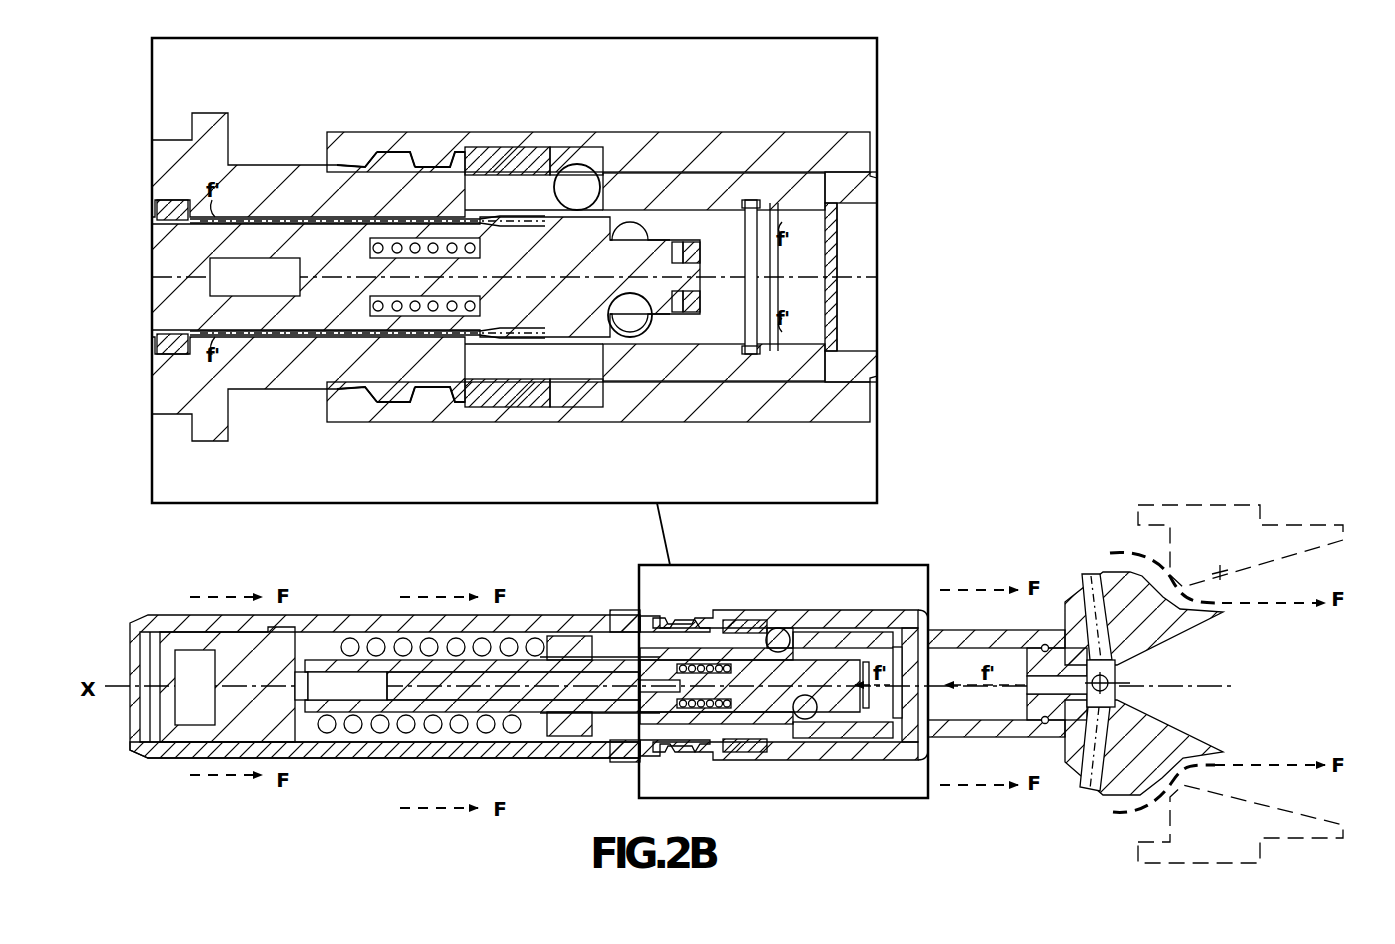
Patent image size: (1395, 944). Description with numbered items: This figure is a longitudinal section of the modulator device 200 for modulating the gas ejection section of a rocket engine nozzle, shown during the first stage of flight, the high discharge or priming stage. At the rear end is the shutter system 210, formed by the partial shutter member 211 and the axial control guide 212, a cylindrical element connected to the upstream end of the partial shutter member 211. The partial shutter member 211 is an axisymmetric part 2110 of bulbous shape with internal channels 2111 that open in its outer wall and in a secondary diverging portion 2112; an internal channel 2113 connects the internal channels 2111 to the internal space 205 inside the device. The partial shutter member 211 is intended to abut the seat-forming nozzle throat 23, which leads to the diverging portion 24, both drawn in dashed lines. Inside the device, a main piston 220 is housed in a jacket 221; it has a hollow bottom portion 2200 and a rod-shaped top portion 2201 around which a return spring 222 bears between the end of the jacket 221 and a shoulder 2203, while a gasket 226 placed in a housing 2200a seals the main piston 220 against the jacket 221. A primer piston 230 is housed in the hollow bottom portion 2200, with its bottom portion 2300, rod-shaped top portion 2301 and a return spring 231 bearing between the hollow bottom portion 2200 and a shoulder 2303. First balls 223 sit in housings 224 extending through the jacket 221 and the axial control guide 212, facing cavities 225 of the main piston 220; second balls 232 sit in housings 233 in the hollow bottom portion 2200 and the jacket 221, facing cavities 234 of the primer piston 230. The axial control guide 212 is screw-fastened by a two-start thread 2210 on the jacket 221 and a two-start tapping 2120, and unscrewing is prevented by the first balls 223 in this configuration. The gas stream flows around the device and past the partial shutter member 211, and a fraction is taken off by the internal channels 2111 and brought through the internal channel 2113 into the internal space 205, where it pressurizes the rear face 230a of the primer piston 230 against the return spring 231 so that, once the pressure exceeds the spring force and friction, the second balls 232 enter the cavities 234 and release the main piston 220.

The modulator device 200 is at (240, 826).
The internal space 205 is at (860, 322).
The shutter system 210 is at (1068, 600).
The partial shutter member 211 is at (1108, 557).
The axial control guide 212 is at (790, 150).
The main piston 220 is at (160, 303).
The jacket 221 is at (450, 745).
The return spring 222 is at (330, 725).
The first balls 223 is at (577, 188).
The housings 224 is at (640, 195).
The cavities 225 is at (522, 175).
The gasket 226 is at (188, 215).
The primer piston 230 is at (505, 375).
The rear face 230a is at (705, 270).
The return spring 231 is at (365, 310).
The second balls 232 is at (632, 320).
The housings 233 is at (668, 320).
The cavities 234 is at (745, 300).
The axisymmetric part 2110 is at (1103, 790).
The internal channels 2111 is at (1115, 683).
The secondary diverging portion 2112 is at (1190, 725).
The internal channel 2113 is at (1040, 690).
The two-start tapping 2120 is at (398, 155).
The hollow bottom portion 2200 is at (460, 345).
The housing 2200a is at (165, 205).
The top portion 2201 is at (400, 692).
The shoulder 2203 is at (562, 648).
The two-start thread 2210 is at (372, 152).
The bottom portion 2300 is at (570, 300).
The top portion 2301 is at (335, 290).
The shoulder 2303 is at (480, 158).
The nozzle throat 23 is at (1220, 580).
The diverging portion 24 is at (1290, 560).